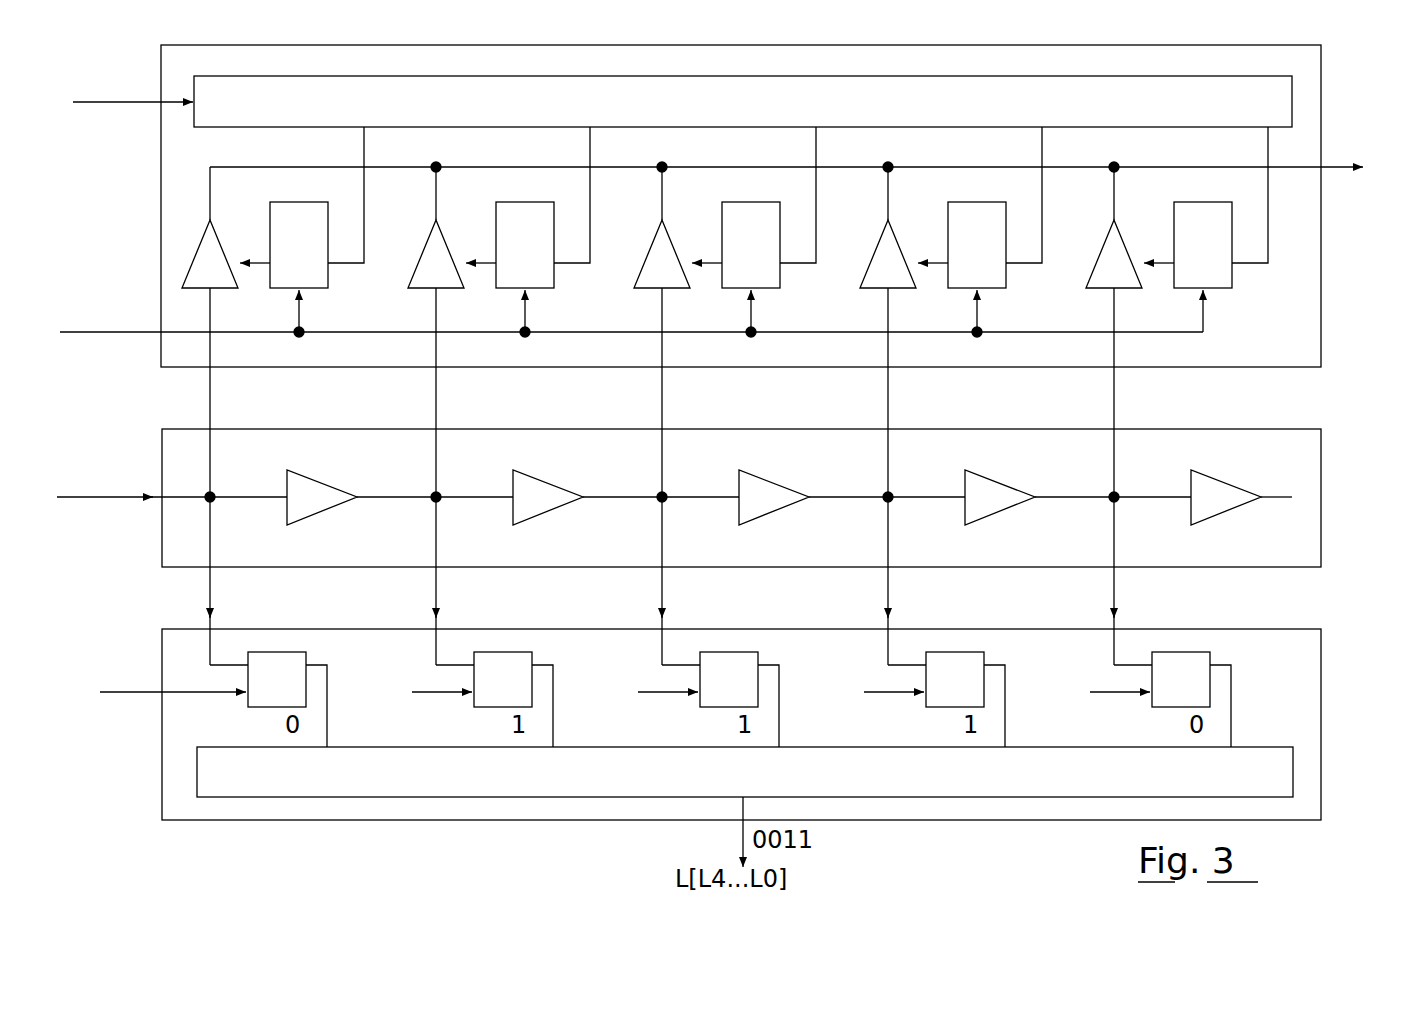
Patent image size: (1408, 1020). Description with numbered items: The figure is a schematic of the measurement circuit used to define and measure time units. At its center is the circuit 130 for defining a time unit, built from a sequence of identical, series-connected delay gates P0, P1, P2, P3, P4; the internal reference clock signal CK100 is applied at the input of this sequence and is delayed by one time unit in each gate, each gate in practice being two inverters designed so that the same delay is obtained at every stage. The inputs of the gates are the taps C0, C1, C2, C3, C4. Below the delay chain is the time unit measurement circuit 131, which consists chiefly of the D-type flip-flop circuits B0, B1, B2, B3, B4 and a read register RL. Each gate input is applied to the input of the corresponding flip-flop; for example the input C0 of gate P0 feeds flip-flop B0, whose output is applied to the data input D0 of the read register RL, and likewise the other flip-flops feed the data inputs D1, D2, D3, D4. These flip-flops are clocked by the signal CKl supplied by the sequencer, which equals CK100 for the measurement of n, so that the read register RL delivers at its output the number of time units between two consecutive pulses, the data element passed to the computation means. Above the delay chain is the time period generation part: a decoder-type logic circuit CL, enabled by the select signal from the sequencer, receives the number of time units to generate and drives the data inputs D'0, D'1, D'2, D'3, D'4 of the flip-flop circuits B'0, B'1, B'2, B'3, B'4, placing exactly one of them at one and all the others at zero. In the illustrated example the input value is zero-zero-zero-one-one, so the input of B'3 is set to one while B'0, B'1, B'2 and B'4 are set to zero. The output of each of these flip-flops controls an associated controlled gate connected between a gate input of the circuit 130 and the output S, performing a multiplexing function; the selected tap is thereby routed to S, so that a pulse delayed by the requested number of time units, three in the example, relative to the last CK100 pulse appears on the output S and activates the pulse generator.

The logic circuit CL is at (1279, 99).
The output signal S is at (799, 167).
The circuit for defining a time unit 130 is at (1307, 442).
The time unit measurement circuit 131 is at (1307, 643).
The read register RL is at (203, 774).
The internal reference clock signal CK100 is at (133, 484).
The clock signal CKl is at (173, 679).
The flip-flop circuit B'0 is at (299, 234).
The flip-flop circuit B'1 is at (525, 234).
The flip-flop circuit B'2 is at (751, 234).
The flip-flop circuit B'3 is at (977, 234).
The flip-flop circuit B'4 is at (1203, 234).
The data input D'0 is at (363, 195).
The data input D'1 is at (589, 195).
The data input D'2 is at (815, 195).
The data input D'3 is at (1041, 195).
The data input D'4 is at (1267, 195).
The gate input C0 is at (208, 494).
The gate input C1 is at (434, 494).
The gate input C2 is at (660, 494).
The gate input C3 is at (886, 494).
The gate input C4 is at (1112, 494).
The delay gate P0 is at (320, 490).
The delay gate P1 is at (546, 490).
The delay gate P2 is at (772, 490).
The delay gate P3 is at (998, 490).
The delay gate P4 is at (1224, 490).
The flip-flop circuit B0 is at (280, 652).
The flip-flop circuit B1 is at (506, 652).
The flip-flop circuit B2 is at (732, 652).
The flip-flop circuit B3 is at (958, 652).
The flip-flop circuit B4 is at (1184, 652).
The data input D0 is at (336, 706).
The data input D1 is at (562, 706).
The data input D2 is at (788, 706).
The data input D3 is at (1014, 706).
The data input D4 is at (1240, 706).